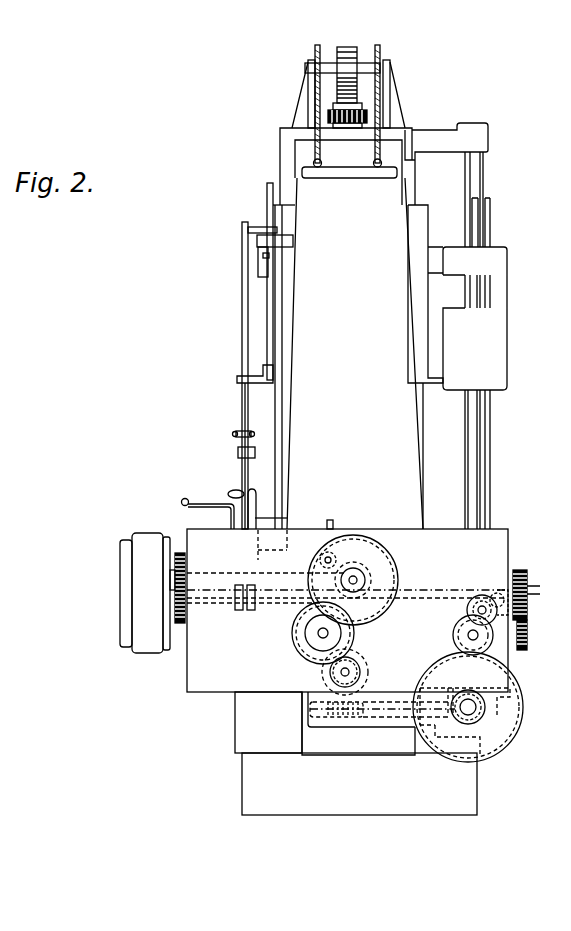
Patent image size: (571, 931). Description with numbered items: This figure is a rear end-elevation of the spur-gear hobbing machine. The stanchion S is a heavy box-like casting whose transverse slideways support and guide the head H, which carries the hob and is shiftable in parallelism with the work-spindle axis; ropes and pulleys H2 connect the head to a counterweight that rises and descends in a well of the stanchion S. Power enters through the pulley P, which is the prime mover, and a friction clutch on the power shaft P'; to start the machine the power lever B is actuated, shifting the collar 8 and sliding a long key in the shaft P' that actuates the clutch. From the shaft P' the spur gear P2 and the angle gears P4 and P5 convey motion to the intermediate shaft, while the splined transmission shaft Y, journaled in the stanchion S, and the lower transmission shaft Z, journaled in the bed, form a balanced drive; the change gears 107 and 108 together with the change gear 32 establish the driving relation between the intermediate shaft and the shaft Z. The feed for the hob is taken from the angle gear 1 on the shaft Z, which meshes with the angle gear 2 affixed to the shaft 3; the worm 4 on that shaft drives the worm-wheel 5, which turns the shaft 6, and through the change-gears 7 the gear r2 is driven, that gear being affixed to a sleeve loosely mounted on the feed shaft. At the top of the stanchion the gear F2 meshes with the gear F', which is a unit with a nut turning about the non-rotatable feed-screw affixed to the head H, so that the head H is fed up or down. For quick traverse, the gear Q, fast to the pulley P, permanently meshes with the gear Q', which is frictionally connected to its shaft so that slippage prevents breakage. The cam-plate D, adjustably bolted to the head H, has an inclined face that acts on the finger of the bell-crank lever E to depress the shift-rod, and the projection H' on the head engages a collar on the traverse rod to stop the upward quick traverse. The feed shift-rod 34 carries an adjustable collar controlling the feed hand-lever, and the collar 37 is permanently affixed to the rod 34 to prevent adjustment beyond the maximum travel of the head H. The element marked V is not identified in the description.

The gear F' is at (318, 76).
The gear F2 is at (328, 113).
The ropes and pulleys H2 is at (376, 150).
The cam-plate D is at (268, 186).
The bell-crank lever E is at (256, 226).
The head H is at (425, 282).
The transmission shaft Y is at (480, 221).
The stanchion S is at (355, 353).
The projection H' is at (230, 377).
The collar 37 is at (238, 458).
The feed shift-rod 34 is at (245, 472).
The lever V is at (257, 495).
The power lever B is at (182, 503).
The pulley P is at (145, 593).
The gear Q is at (195, 602).
The gear Q' is at (193, 568).
The collar 8 is at (245, 612).
The power shaft P' is at (304, 633).
The gear r2 is at (400, 546).
The change-gears 7 is at (360, 626).
The shaft 6 is at (350, 672).
The worm-wheel 5 is at (322, 672).
The change gear 108 is at (455, 644).
The change gear 107 is at (455, 628).
The angle gear P4 is at (497, 598).
The angle gear P5 is at (468, 607).
The spur gear P2 is at (528, 582).
The transmission shaft Z is at (472, 711).
The angle gear 1 is at (488, 703).
The angle gear 2 is at (465, 726).
The change gear 32 is at (523, 707).
The worm 4 is at (340, 719).
The shaft 3 is at (388, 718).